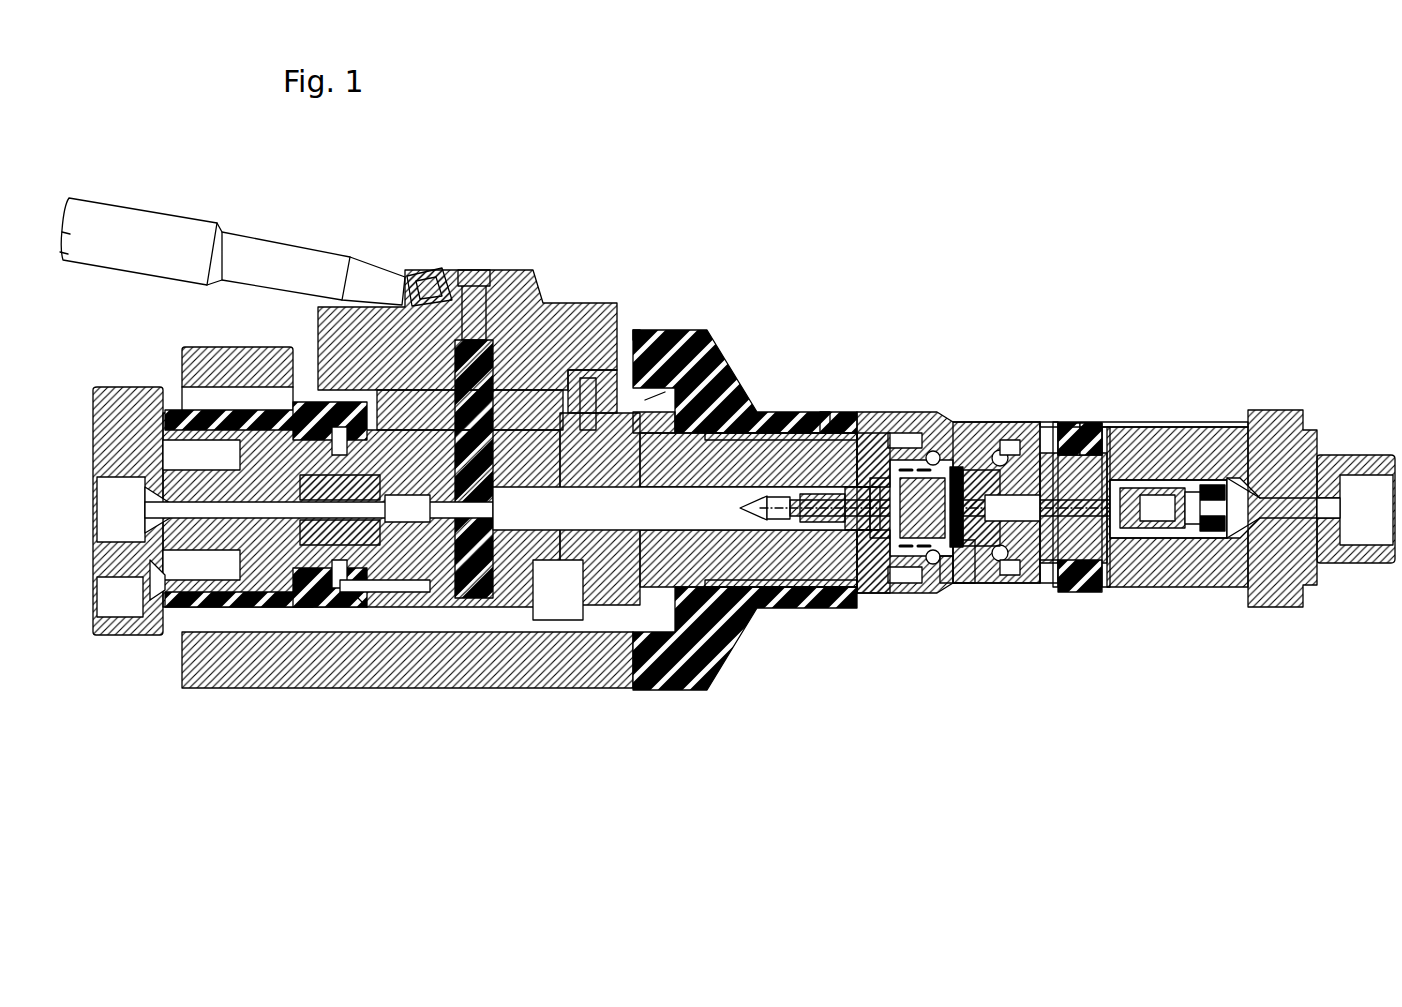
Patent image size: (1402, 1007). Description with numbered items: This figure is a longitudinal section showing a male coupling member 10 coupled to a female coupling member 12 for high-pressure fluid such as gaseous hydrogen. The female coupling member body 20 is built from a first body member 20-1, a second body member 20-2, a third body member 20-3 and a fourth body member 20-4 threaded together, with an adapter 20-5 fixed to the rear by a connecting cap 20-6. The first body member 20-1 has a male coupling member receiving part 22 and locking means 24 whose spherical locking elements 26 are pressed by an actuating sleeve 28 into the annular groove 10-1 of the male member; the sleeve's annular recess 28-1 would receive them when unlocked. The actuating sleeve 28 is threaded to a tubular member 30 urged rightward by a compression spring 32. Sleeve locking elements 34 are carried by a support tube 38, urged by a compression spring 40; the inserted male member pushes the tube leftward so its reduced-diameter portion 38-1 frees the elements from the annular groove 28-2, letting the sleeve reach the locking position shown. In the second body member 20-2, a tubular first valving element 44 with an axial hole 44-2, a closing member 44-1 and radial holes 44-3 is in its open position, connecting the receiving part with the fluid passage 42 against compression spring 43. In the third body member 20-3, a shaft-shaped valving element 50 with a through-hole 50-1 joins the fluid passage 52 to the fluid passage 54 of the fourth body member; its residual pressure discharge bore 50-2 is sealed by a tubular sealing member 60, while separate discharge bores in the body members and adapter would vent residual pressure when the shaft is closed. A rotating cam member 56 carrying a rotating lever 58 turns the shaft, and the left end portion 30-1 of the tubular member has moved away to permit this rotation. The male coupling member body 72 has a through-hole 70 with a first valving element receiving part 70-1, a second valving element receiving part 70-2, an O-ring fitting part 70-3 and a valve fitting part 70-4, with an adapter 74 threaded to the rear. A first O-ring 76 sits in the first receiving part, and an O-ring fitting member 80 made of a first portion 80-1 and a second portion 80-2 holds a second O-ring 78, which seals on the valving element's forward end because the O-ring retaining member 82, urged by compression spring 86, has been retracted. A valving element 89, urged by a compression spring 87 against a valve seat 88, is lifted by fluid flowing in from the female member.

The male coupling member 10 is at (1198, 381).
The annular groove 10-1 is at (1020, 410).
The female coupling member 12 is at (660, 253).
The female coupling member body 20 is at (748, 319).
The first body member 20-1 is at (1035, 430).
The second body member 20-2 is at (825, 410).
The third body member 20-3 is at (607, 378).
The fourth body member 20-4 is at (270, 560).
The adapter 20-5 is at (118, 387).
The connecting cap 20-6 is at (228, 590).
The male coupling member receiving part 22 is at (1072, 590).
The locking means 24 is at (968, 382).
The locking elements 26 is at (950, 575).
The actuating sleeve 28 is at (905, 412).
The annular recess 28-1 is at (1050, 585).
The annular groove 28-2 is at (960, 440).
The tubular member 30 is at (780, 445).
The left end portion 30-1 is at (632, 400).
The compression spring 32 is at (728, 378).
The sleeve locking elements 34 is at (930, 412).
The support tube 38 is at (880, 540).
The reduced-diameter portion 38-1 is at (920, 560).
The compression spring 40 is at (845, 568).
The fluid passage 42 is at (702, 622).
The compression spring 43 is at (852, 450).
The first valving element 44 is at (1063, 410).
The closing member 44-1 is at (768, 495).
The axial hole 44-2 is at (858, 445).
The radial holes 44-3 is at (790, 610).
The shaft-shaped valving element 50 is at (512, 300).
The through-hole 50-1 is at (488, 572).
The residual pressure discharge bore 50-2 is at (470, 580).
The fluid passage 52 is at (560, 557).
The fluid passage 54 is at (300, 600).
The rotating cam member 56 is at (430, 272).
The rotating lever 58 is at (300, 245).
The tubular sealing member 60 is at (393, 562).
The through-hole 70 is at (1260, 580).
The first valving element receiving part 70-1 is at (945, 570).
The second valving element receiving part 70-2 is at (965, 560).
The O-ring fitting part 70-3 is at (1058, 596).
The valve fitting part 70-4 is at (1240, 480).
The male coupling member body 72 is at (1225, 427).
The adapter 74 is at (1360, 565).
The first O-ring 76 is at (941, 458).
The second O-ring 78 is at (1002, 563).
The O-ring fitting member 80 is at (1105, 430).
The first portion 80-1 is at (1083, 420).
The second portion 80-2 is at (1093, 445).
The O-ring retaining member 82 is at (1103, 595).
The compression spring 86 is at (1138, 555).
The compression spring 87 is at (1222, 580).
The valve seat 88 is at (1162, 555).
The valving element 89 is at (1195, 555).